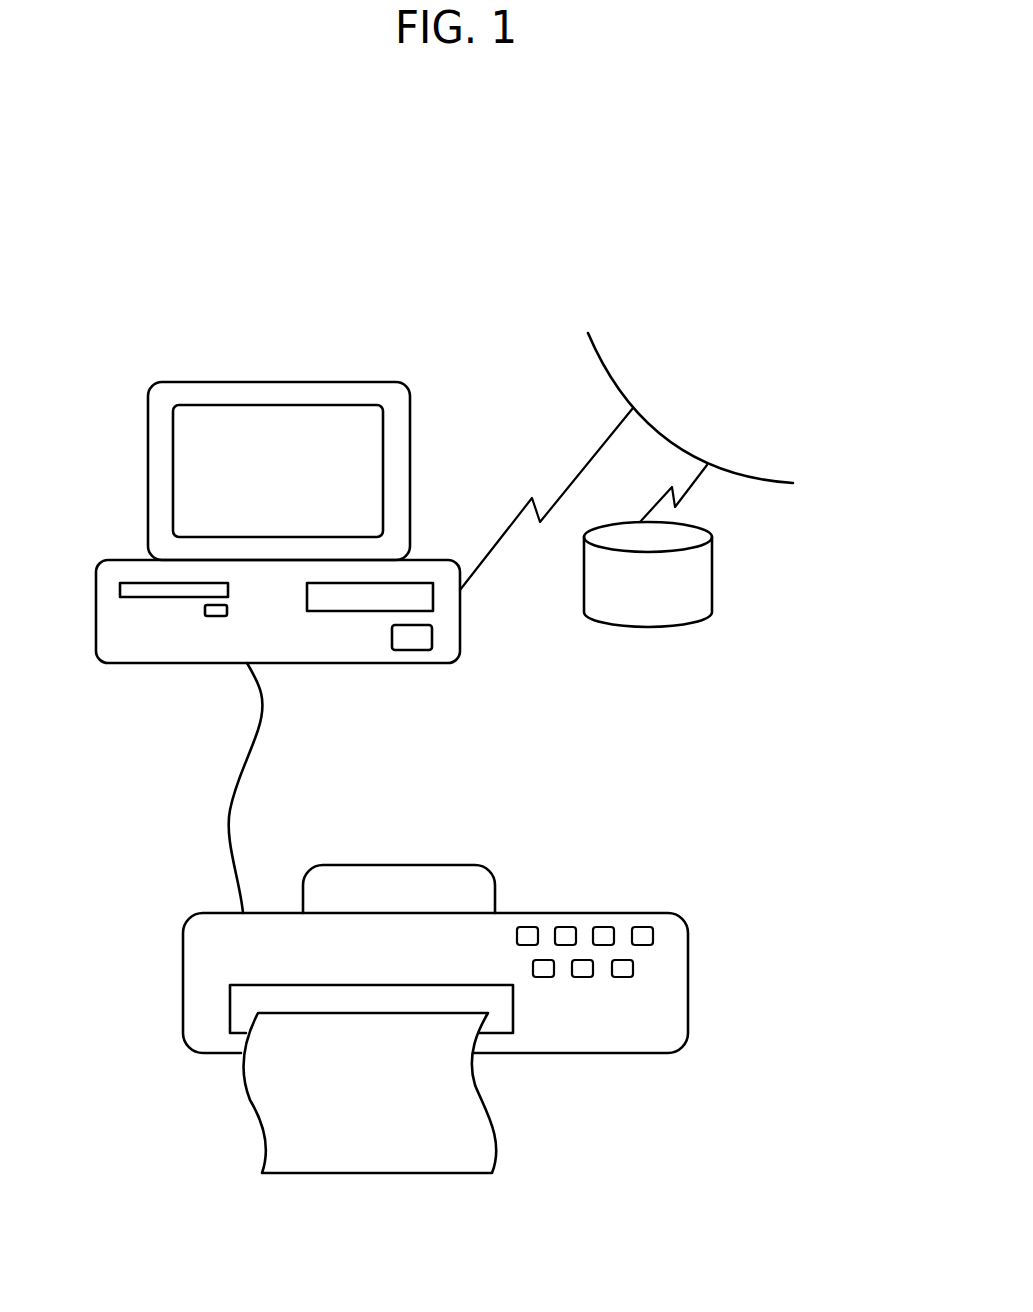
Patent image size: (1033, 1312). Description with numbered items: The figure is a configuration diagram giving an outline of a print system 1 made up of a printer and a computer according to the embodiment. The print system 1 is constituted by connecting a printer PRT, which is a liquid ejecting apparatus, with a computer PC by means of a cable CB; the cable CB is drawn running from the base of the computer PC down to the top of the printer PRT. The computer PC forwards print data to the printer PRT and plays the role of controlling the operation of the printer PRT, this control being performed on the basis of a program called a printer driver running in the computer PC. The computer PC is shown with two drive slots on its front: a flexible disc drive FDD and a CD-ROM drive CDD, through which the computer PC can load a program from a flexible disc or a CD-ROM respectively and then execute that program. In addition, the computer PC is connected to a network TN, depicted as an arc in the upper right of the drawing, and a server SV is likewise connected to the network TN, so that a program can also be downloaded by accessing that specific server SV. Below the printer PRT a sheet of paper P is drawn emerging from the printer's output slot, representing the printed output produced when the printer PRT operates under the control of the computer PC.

The print system 1 is at (750, 334).
The network TN is at (626, 461).
The computer PC is at (330, 569).
The flexible disc drive FDD is at (150, 590).
The CD-ROM drive CDD is at (412, 595).
The server SV is at (648, 628).
The cable CB is at (243, 770).
The printer PRT is at (630, 915).
The printing paper P is at (498, 1155).